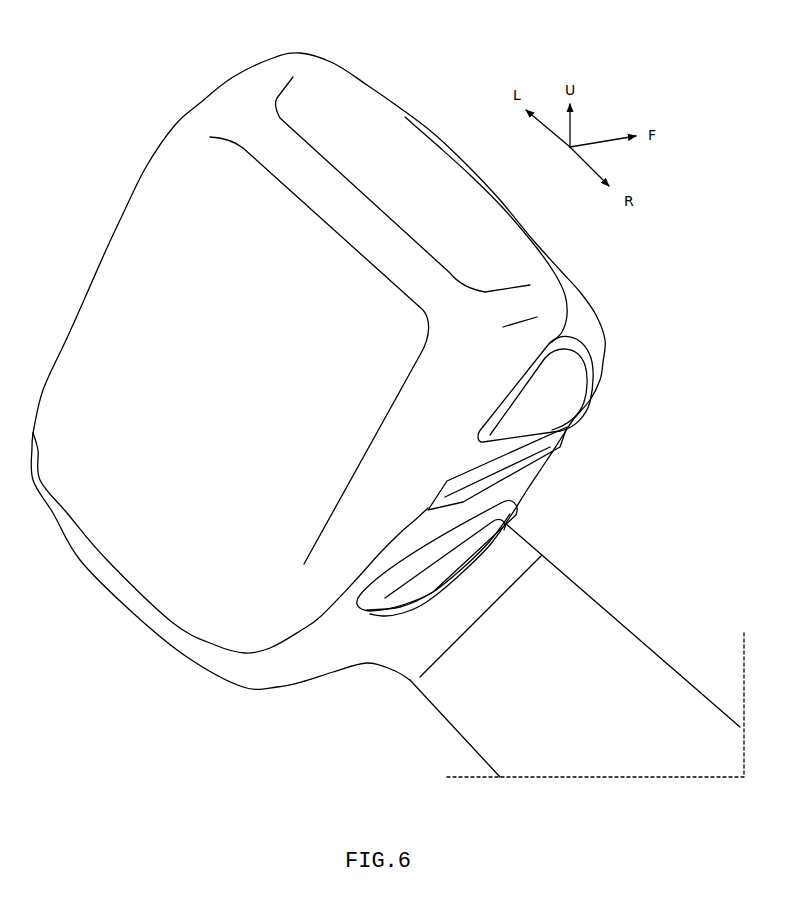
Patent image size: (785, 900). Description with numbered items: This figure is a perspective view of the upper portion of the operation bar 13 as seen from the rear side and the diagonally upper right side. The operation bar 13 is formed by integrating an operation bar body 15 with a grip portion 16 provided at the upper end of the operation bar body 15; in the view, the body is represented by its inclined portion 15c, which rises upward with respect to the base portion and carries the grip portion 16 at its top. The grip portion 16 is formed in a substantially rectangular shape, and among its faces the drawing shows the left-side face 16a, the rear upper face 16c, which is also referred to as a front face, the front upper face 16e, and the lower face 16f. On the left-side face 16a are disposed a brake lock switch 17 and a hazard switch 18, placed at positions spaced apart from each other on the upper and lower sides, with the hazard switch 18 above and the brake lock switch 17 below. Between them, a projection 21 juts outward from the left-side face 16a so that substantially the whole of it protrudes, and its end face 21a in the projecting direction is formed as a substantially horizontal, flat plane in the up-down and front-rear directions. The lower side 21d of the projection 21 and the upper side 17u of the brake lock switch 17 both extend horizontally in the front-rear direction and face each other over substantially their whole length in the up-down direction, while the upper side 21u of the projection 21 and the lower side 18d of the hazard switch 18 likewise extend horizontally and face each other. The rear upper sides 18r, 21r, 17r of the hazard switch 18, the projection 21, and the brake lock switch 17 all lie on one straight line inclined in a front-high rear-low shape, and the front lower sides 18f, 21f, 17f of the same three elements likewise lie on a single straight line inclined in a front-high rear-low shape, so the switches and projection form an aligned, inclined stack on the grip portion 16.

The operation bar 13 is at (392, 405).
The operation bar body 15 is at (582, 650).
The inclined portion 15c is at (615, 618).
The grip portion 16 is at (340, 401).
The left-side face 16a is at (355, 615).
The rear upper face 16c is at (157, 213).
The front upper face 16e is at (377, 140).
The lower face 16f is at (278, 690).
The brake lock switch 17 is at (461, 589).
The rear upper side of brake lock switch 17r is at (397, 577).
The upper side of brake lock switch 17u is at (522, 500).
The front lower side of brake lock switch 17f is at (472, 570).
The hazard switch 18 is at (552, 387).
The rear upper side of hazard switch 18r is at (530, 390).
The front lower side of hazard switch 18f is at (590, 392).
The lower side of hazard switch 18d is at (568, 430).
The projection 21 is at (498, 462).
The upper side of projection 21u is at (475, 462).
The rear upper side of projection 21r is at (447, 484).
The front lower side of projection 21f is at (552, 450).
The end face of projection 21a is at (543, 473).
The lower side of projection 21d is at (532, 490).